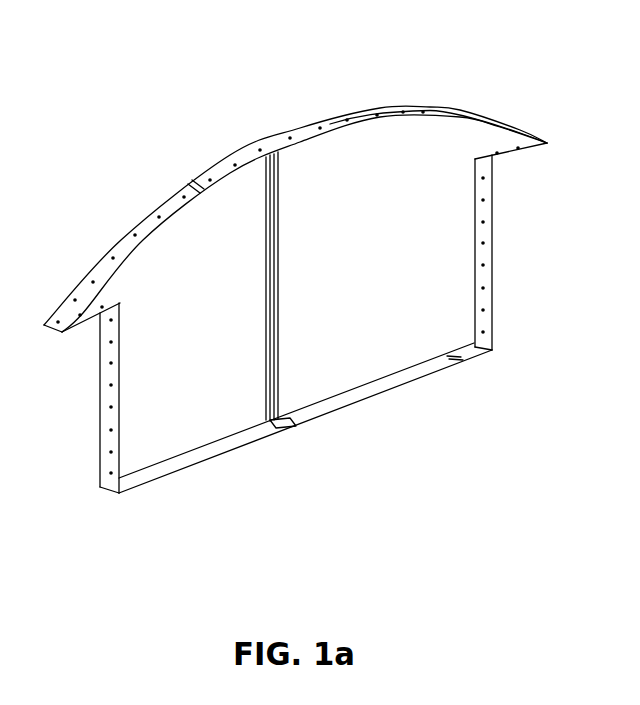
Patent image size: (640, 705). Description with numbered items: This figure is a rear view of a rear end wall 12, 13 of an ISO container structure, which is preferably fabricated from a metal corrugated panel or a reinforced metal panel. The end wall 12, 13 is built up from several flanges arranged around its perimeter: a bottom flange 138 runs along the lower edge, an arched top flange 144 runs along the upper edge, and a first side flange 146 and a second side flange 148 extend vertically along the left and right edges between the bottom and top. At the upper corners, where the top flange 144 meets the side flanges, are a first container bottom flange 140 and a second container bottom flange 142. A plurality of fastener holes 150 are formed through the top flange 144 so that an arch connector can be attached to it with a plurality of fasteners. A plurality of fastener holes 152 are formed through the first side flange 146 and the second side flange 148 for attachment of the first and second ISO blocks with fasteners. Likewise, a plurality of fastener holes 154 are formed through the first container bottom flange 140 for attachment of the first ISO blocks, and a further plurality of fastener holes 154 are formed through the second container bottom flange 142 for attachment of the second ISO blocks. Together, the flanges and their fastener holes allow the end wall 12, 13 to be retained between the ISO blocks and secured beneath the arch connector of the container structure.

The end wall 12 is at (302, 271).
The end wall 13 is at (302, 271).
The bottom flange 138 is at (312, 414).
The first container bottom flange 140 is at (97, 320).
The second container bottom flange 142 is at (515, 157).
The top flange 144 is at (308, 130).
The first side flange 146 is at (107, 440).
The second side flange 148 is at (487, 254).
The fastener holes 150 is at (262, 150).
The fastener holes 152 is at (110, 407).
The fastener holes 154 is at (101, 311).